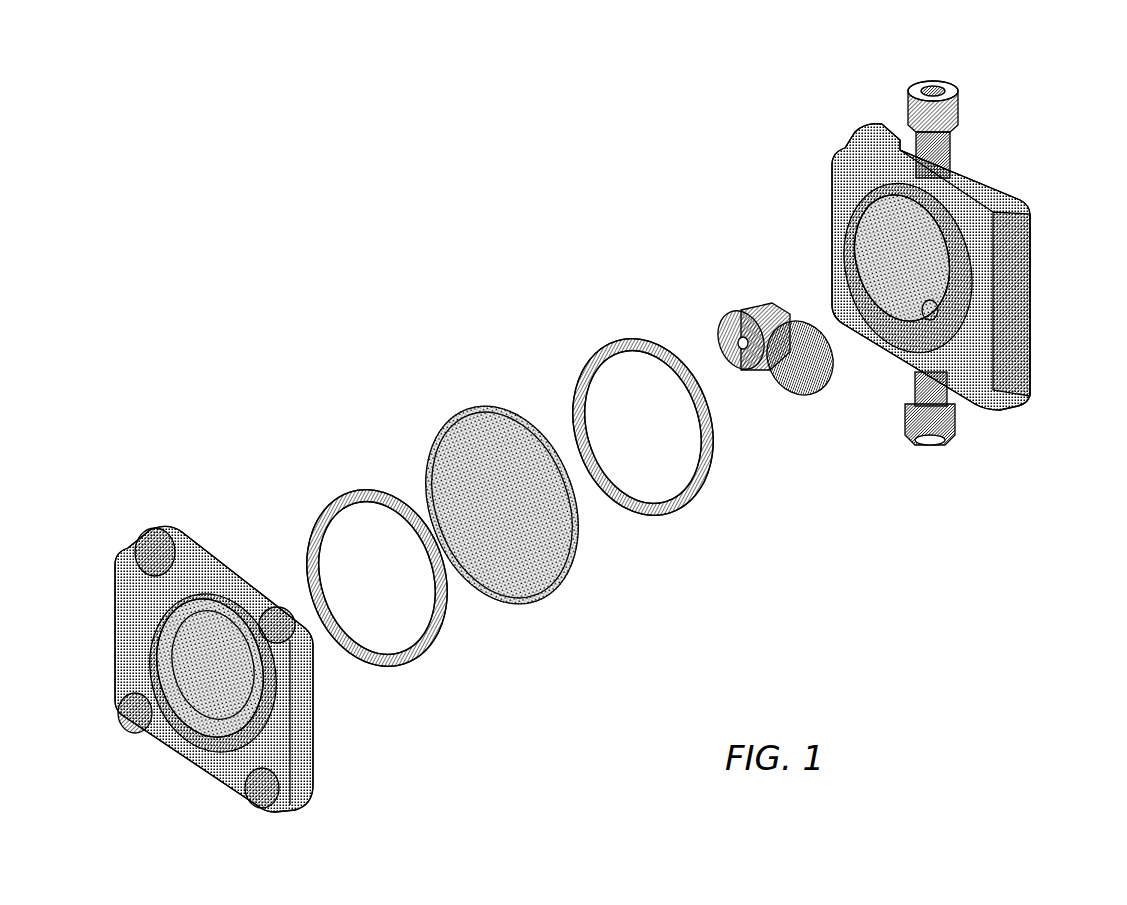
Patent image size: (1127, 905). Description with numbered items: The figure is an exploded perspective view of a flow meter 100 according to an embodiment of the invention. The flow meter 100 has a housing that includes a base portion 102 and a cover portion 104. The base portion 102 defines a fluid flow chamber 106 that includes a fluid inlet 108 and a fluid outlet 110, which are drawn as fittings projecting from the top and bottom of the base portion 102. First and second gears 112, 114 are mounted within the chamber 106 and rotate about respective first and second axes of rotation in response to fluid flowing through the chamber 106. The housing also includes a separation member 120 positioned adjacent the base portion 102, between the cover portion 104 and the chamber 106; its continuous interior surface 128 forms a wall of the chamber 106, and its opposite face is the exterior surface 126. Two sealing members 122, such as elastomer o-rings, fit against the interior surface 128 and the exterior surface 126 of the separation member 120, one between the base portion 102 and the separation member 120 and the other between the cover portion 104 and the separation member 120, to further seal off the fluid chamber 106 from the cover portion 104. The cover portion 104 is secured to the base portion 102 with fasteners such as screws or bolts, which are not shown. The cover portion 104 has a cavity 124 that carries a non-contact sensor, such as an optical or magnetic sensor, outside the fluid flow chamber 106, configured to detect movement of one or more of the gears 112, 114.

The flow meter 100 is at (294, 174).
The base portion 102 is at (1020, 195).
The cover portion 104 is at (298, 800).
The fluid flow chamber 106 is at (887, 243).
The fluid inlet 108 is at (930, 308).
The fluid outlet 110 is at (935, 85).
The first gear 112 is at (746, 306).
The second gear 114 is at (790, 398).
The separation member 120 is at (527, 603).
The sealing members 122 is at (328, 500).
The cavity 124 is at (215, 640).
The exterior surface 126 is at (447, 427).
The continuous interior surface 128 is at (520, 463).